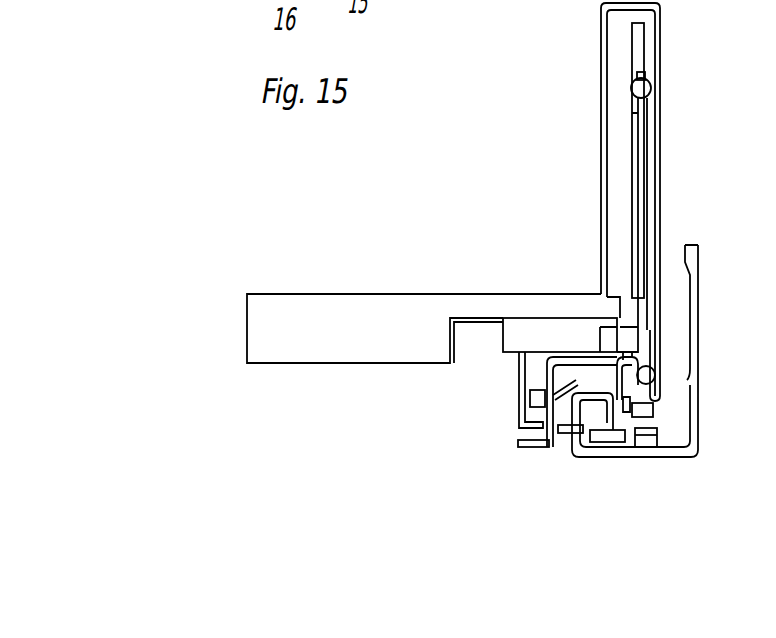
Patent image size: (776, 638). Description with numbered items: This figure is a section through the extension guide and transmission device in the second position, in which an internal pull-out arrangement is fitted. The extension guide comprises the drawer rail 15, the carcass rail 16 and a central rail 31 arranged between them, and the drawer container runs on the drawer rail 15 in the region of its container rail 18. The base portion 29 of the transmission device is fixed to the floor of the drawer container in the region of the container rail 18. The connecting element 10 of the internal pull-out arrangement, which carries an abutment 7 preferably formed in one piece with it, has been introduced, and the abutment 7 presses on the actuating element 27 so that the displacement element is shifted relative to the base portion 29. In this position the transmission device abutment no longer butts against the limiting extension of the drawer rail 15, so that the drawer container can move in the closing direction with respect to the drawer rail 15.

The abutment 7 is at (623, 347).
The connecting element 10 is at (643, 222).
The drawer rail 15 is at (522, 408).
The carcass rail 16 is at (670, 453).
The container rail 18 is at (473, 323).
The actuating element 27 is at (597, 347).
The base portion 29 is at (544, 332).
The central rail 31 is at (535, 447).